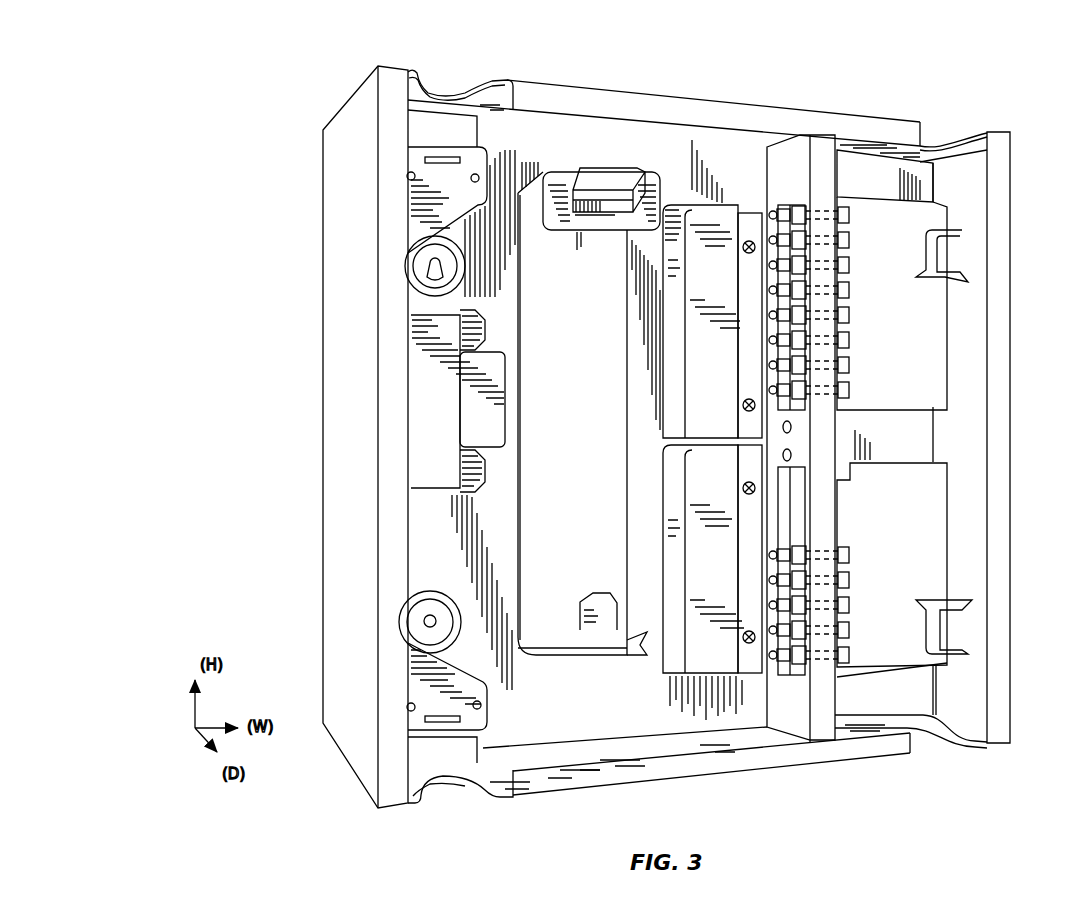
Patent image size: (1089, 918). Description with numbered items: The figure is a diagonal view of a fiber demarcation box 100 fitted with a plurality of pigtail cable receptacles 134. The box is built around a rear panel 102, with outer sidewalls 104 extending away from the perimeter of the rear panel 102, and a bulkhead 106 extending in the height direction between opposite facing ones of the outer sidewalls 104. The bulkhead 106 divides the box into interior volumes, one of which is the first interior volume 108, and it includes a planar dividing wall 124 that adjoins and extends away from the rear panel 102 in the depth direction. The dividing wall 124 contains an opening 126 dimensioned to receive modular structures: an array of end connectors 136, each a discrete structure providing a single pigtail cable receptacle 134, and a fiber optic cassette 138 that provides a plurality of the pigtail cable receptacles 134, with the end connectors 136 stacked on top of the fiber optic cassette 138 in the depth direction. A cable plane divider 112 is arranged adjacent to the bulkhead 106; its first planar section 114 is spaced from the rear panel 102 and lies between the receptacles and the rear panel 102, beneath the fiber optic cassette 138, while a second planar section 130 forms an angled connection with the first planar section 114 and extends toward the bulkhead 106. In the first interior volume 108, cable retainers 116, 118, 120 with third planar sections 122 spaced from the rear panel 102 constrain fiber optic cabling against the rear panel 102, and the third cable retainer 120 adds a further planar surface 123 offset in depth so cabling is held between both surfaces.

The fiber demarcation box 100 is at (832, 75).
The rear panel 102 is at (440, 540).
The outer sidewalls 104 is at (488, 105).
The bulkhead 106 is at (825, 712).
The first interior volume 108 is at (642, 152).
The cable plane divider 112 is at (665, 389).
The first planar section 114 is at (712, 307).
The cable retainer 116 is at (570, 152).
The cable retainer 118 is at (583, 595).
The third cable retainer 120 is at (415, 300).
The third planar section 122 is at (443, 418).
The further planar surface 123 is at (465, 330).
The dividing wall 124 is at (800, 448).
The opening 126 is at (808, 305).
The second planar section 130 is at (665, 273).
The pigtail cable receptacle 134 is at (777, 212).
The end connector 136 is at (852, 217).
The fiber optic cassette 138 is at (928, 322).